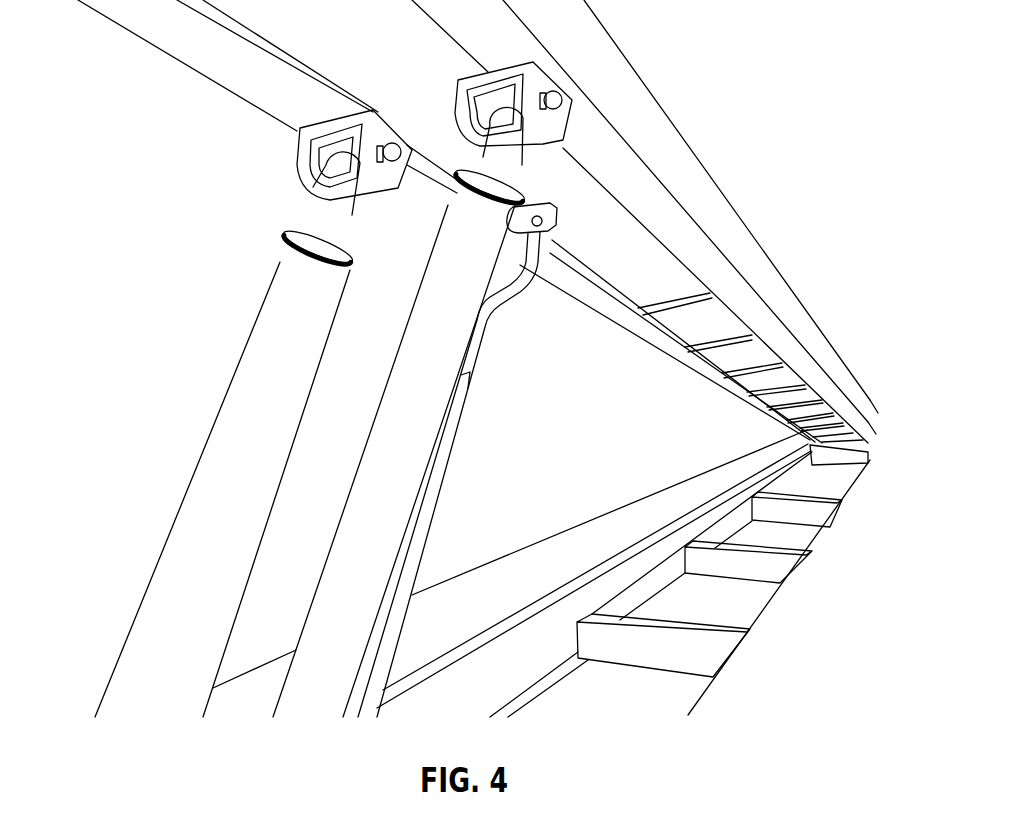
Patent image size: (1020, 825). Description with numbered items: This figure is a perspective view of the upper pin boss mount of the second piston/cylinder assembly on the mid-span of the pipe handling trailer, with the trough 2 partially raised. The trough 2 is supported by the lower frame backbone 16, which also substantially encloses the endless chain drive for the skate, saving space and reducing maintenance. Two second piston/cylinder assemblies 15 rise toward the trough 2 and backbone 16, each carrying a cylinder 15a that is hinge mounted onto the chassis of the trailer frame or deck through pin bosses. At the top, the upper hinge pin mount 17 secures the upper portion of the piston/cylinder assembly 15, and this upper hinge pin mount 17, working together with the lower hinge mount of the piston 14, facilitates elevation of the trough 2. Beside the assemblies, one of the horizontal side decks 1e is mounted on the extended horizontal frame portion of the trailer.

The horizontal side deck 1e is at (575, 540).
The trough 2 is at (732, 204).
The piston 14 is at (307, 210).
The second piston/cylinder assembly 15 is at (208, 436).
The cylinder 15a is at (283, 263).
The backbone 16 is at (118, 24).
The upper hinge pin mount 17 is at (565, 117).